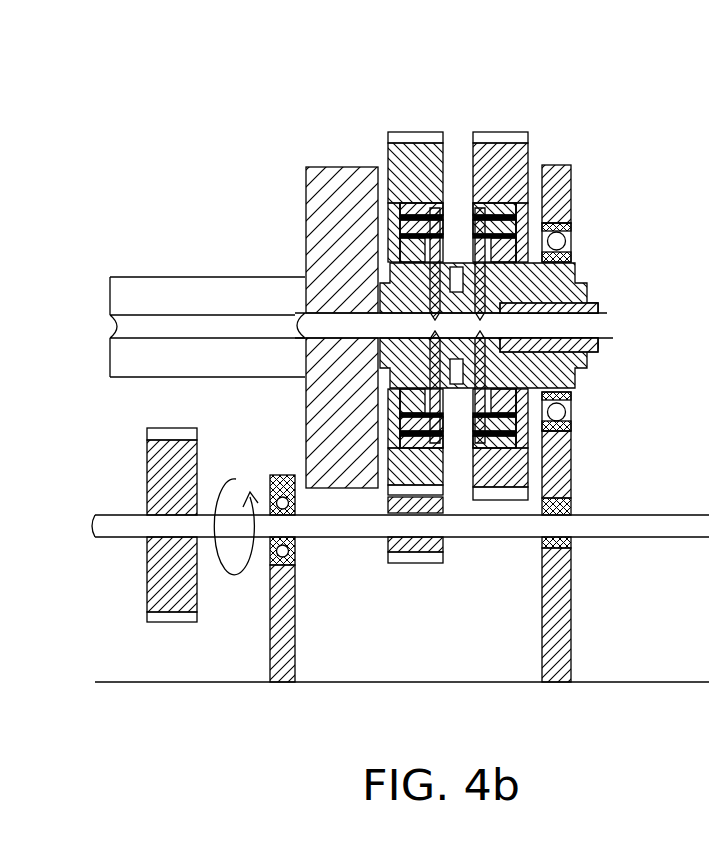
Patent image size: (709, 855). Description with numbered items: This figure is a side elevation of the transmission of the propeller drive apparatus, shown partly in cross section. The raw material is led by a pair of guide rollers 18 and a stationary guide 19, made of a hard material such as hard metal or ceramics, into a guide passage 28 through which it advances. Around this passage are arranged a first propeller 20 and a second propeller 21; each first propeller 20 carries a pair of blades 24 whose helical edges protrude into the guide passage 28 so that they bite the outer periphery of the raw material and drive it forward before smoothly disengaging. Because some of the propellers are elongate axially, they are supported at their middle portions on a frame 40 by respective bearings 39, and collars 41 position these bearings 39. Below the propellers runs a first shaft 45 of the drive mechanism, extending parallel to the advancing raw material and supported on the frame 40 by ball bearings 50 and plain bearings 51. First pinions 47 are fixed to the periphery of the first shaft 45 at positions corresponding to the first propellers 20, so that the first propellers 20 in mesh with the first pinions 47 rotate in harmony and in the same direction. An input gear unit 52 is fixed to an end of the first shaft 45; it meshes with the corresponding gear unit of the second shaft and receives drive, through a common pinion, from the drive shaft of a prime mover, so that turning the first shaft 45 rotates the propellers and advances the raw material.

The guide rollers 18 is at (196, 275).
The stationary guide 19 is at (318, 203).
The first propeller 20 is at (422, 165).
The second propeller 21 is at (505, 157).
The blades 24 is at (447, 398).
The guide passage 28 is at (392, 313).
The bearings 39 is at (570, 400).
The frame 40 is at (558, 612).
The collars 41 is at (578, 296).
The first shaft 45 is at (128, 527).
The first pinions 47 is at (416, 547).
The ball bearings 50 is at (297, 548).
The plain bearings 51 is at (562, 500).
The input gear unit 52 is at (182, 595).